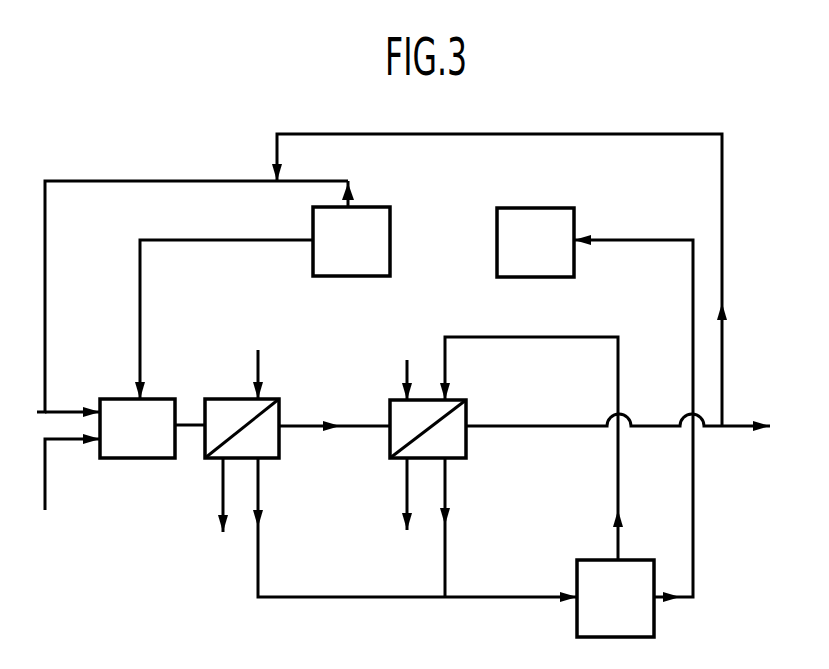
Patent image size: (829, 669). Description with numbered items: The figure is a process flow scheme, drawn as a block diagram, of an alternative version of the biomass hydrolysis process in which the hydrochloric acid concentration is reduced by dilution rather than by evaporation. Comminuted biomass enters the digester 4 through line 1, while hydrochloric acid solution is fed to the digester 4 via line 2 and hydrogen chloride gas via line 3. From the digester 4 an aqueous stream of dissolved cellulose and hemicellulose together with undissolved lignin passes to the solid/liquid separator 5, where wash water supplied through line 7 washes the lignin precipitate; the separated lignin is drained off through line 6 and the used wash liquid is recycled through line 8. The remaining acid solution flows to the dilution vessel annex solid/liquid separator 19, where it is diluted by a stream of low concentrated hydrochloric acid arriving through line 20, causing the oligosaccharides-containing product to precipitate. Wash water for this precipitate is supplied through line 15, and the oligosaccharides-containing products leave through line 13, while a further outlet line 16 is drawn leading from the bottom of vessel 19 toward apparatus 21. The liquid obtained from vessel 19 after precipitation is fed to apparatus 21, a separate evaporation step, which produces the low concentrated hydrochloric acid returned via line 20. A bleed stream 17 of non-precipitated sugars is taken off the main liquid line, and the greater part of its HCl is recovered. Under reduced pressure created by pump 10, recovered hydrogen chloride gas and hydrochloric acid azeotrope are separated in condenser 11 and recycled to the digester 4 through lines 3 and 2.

The line 1 is at (72, 474).
The line 2 is at (195, 296).
The line 3 is at (226, 319).
The digester 4 is at (137, 428).
The solid/liquid separator 5 is at (267, 440).
The line 6 is at (214, 495).
The line 7 is at (267, 373).
The line 8 is at (417, 527).
The pump 10 is at (535, 242).
The condenser 11 is at (351, 241).
The line 13 is at (392, 494).
The line 15 is at (389, 375).
The second separator outlet stream to unit 21 16 is at (460, 527).
The bleed stream 17 is at (618, 438).
The dilution vessel annex solid/liquid separator 19 is at (455, 443).
The line 20 is at (531, 448).
The apparatus 21 is at (615, 598).